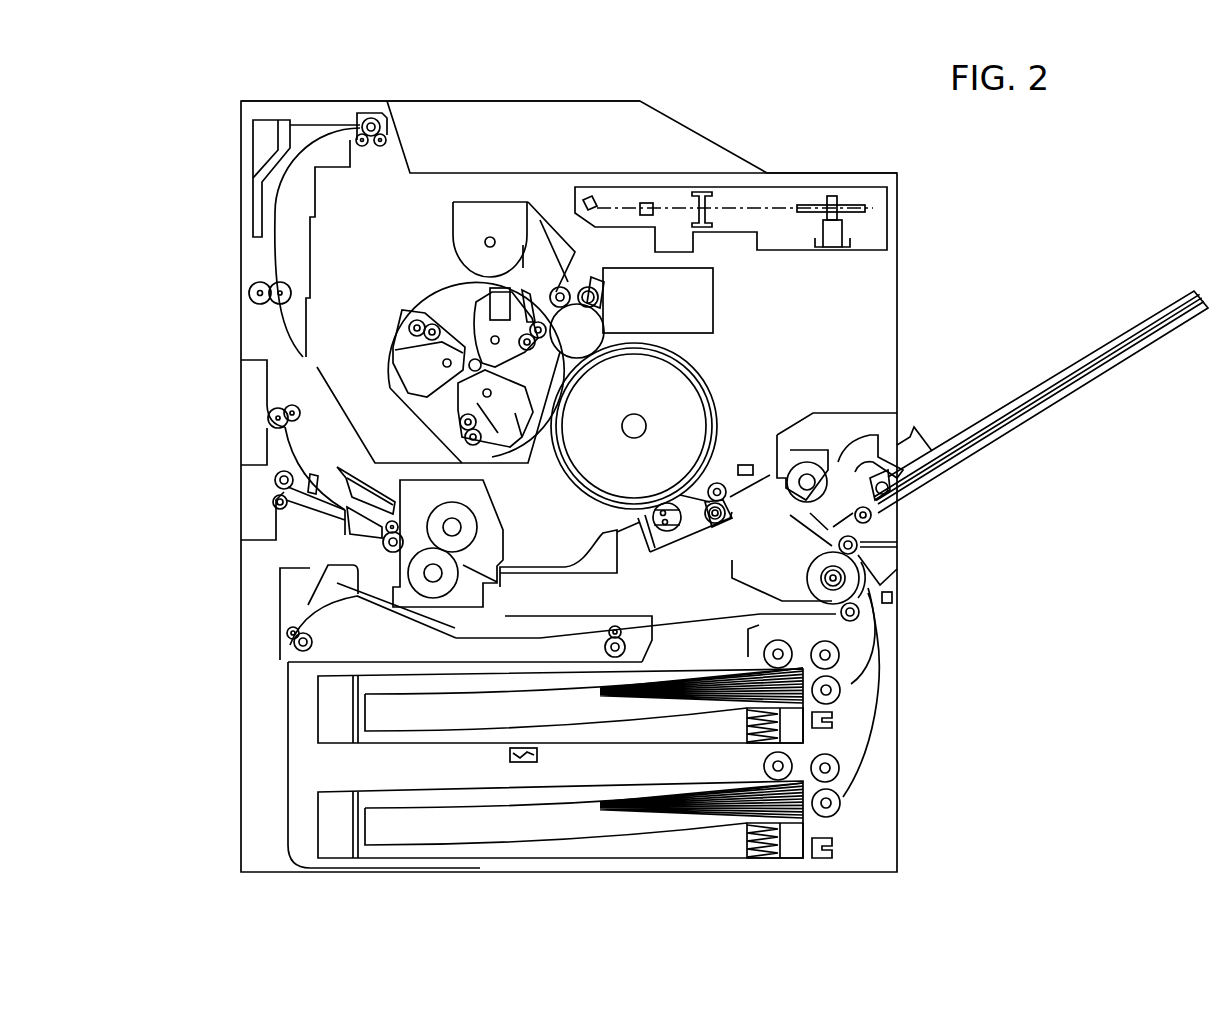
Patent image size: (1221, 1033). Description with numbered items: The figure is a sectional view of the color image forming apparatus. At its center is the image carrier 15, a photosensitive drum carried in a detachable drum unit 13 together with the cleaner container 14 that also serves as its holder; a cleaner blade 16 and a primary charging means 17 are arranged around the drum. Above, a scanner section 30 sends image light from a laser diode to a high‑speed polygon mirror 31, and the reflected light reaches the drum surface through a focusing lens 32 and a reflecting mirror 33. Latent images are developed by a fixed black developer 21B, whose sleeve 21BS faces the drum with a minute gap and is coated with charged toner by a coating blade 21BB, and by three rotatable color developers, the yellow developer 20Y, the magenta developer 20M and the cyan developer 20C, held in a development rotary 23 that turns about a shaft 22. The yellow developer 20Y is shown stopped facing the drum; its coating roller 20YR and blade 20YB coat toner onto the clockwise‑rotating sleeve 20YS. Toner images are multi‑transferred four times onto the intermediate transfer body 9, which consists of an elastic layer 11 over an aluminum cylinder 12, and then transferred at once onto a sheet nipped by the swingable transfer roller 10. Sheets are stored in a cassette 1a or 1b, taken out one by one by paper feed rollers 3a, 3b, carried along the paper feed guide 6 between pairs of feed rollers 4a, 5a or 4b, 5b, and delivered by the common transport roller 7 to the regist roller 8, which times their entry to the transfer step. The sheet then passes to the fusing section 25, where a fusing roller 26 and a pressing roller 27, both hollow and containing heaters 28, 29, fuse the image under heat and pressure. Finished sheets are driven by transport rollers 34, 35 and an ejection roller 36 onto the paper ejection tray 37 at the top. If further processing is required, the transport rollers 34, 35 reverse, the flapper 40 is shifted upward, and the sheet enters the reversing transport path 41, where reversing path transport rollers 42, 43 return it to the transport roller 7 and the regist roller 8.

The cassette 1a is at (575, 706).
The cassette 1b is at (575, 819).
The paper feed roller 3a is at (777, 639).
The paper feed roller 3b is at (763, 767).
The feed roller 4a is at (840, 655).
The feed roller 4b is at (840, 767).
The feed roller 5a is at (841, 690).
The feed roller 5b is at (841, 803).
The paper feed guide 6 is at (876, 708).
The common transport roller 7 is at (859, 576).
The regist roller 8 is at (720, 483).
The intermediate transfer body 9 is at (697, 371).
The transfer roller 10 is at (670, 540).
The elastic layer 11 is at (707, 397).
The aluminum cylinder 12 is at (652, 427).
The drum unit 13 is at (688, 291).
The cleaner container 14 is at (713, 300).
The image carrier 15 is at (604, 331).
The cleaner blade 16 is at (598, 300).
The primary charging means 17 is at (598, 284).
The yellow developer 20Y is at (483, 320).
The blade 20YB is at (515, 300).
The sleeve 20YS is at (520, 345).
The coating roller 20YR is at (530, 333).
The magenta developer 20M is at (422, 378).
The cyan developer 20C is at (515, 415).
The black developer 21B is at (488, 200).
The sleeve 21BS is at (548, 285).
The coating blade 21BB is at (560, 286).
The shaft 22 is at (468, 362).
The development rotary 23 is at (430, 422).
The fusing section 25 is at (503, 554).
The fusing roller 26 is at (460, 526).
The pressing roller 27 is at (456, 580).
The heater 28 is at (352, 470).
The heater 29 is at (430, 585).
The scanner section 30 is at (783, 252).
The polygon mirror 31 is at (835, 200).
The focusing lens 32 is at (710, 200).
The reflecting mirror 33 is at (597, 200).
The transport roller 34 is at (268, 422).
The transport roller 35 is at (253, 302).
The ejection roller 36 is at (371, 138).
The paper ejection tray 37 is at (440, 172).
The flapper 40 is at (382, 528).
The reversing transport path 41 is at (594, 628).
The reversing path transport roller 42 is at (487, 647).
The reversing path transport roller 43 is at (626, 649).